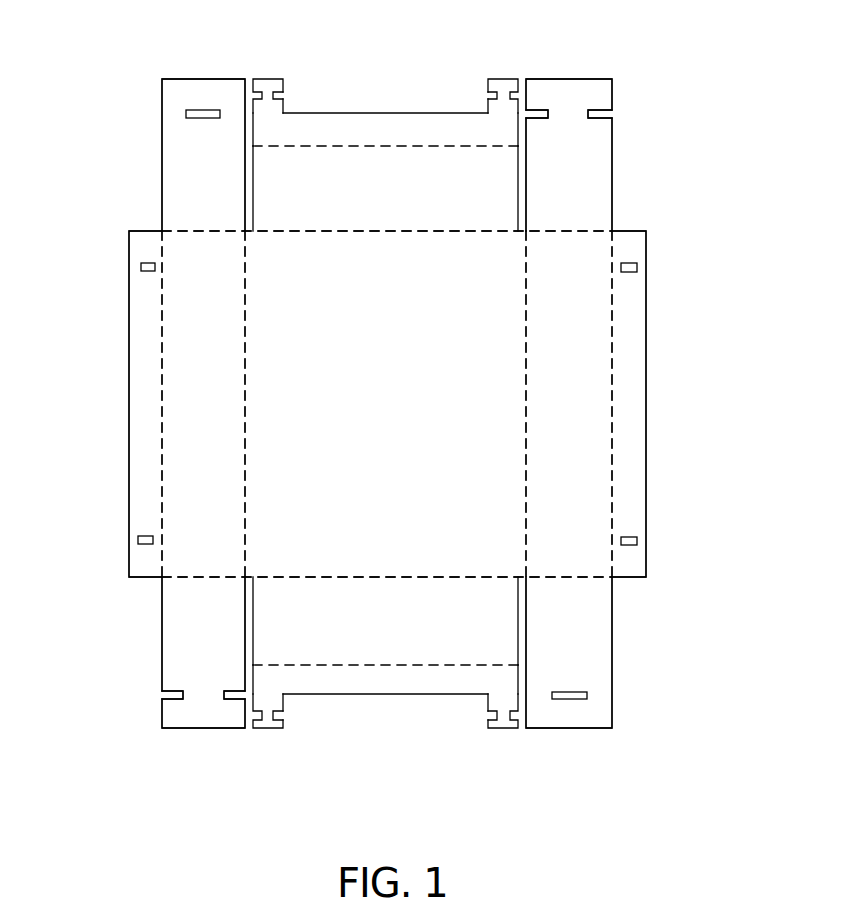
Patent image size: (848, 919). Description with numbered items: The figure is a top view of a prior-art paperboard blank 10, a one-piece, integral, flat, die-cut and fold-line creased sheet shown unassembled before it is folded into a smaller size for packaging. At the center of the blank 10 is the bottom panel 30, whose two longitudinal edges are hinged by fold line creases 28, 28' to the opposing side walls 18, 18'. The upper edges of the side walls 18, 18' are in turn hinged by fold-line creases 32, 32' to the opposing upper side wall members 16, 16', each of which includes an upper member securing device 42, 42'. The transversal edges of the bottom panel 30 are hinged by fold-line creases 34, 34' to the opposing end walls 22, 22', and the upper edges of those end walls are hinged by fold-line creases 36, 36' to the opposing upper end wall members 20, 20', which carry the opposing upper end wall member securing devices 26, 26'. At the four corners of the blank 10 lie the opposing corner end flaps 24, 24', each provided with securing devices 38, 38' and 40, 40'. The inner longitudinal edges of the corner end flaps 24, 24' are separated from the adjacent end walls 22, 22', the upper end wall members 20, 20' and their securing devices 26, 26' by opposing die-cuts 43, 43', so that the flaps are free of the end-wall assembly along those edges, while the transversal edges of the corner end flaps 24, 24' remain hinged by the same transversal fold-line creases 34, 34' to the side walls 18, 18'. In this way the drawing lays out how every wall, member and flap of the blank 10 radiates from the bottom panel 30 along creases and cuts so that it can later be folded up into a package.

The paperboard blank 10 is at (683, 378).
The upper side wall member 16 is at (629, 404).
The upper side wall member 16' is at (113, 404).
The side wall 18 is at (569, 404).
The side wall 18' is at (203, 404).
The upper end wall member 20 is at (385, 706).
The upper end wall member 20' is at (385, 105).
The end wall 22 is at (385, 621).
The end wall 22' is at (385, 188).
The corner end flap 24 is at (387, 652).
The corner end flap 24' is at (387, 155).
The upper end wall member securing device 26 is at (385, 747).
The upper end wall member securing device 26' is at (385, 70).
The fold line crease 28 is at (484, 404).
The fold line crease 28' is at (277, 404).
The bottom panel 30 is at (383, 412).
The fold-line crease 32 is at (583, 404).
The fold-line crease 32' is at (193, 404).
The fold-line crease 34 is at (387, 547).
The fold-line crease 34' is at (387, 263).
The fold-line crease 36 is at (385, 643).
The fold-line crease 36' is at (385, 180).
The securing device 38 is at (164, 723).
The securing device 38' is at (610, 96).
The securing device 40 is at (626, 711).
The securing device 40' is at (149, 123).
The upper member securing device 42 is at (678, 394).
The upper member securing device 42' is at (97, 431).
The die-cut 43 is at (390, 749).
The die-cut 43' is at (389, 58).